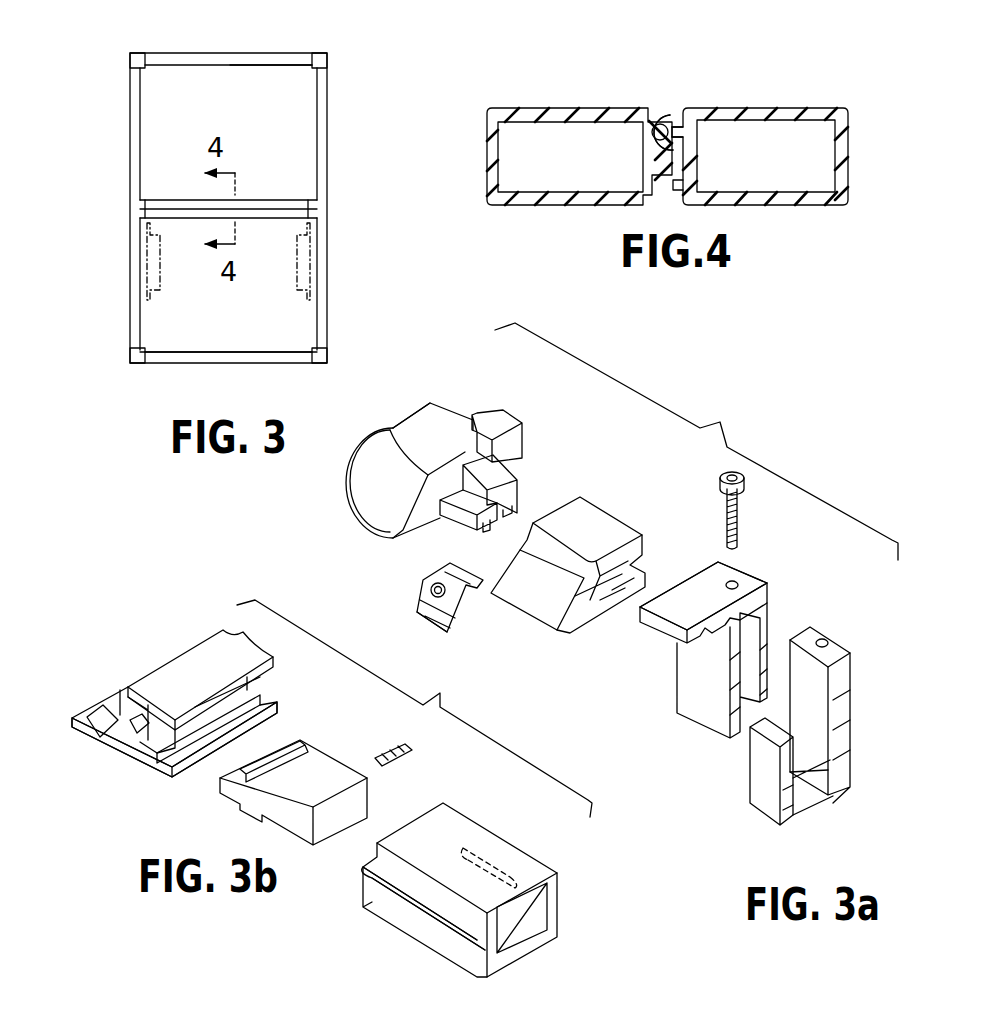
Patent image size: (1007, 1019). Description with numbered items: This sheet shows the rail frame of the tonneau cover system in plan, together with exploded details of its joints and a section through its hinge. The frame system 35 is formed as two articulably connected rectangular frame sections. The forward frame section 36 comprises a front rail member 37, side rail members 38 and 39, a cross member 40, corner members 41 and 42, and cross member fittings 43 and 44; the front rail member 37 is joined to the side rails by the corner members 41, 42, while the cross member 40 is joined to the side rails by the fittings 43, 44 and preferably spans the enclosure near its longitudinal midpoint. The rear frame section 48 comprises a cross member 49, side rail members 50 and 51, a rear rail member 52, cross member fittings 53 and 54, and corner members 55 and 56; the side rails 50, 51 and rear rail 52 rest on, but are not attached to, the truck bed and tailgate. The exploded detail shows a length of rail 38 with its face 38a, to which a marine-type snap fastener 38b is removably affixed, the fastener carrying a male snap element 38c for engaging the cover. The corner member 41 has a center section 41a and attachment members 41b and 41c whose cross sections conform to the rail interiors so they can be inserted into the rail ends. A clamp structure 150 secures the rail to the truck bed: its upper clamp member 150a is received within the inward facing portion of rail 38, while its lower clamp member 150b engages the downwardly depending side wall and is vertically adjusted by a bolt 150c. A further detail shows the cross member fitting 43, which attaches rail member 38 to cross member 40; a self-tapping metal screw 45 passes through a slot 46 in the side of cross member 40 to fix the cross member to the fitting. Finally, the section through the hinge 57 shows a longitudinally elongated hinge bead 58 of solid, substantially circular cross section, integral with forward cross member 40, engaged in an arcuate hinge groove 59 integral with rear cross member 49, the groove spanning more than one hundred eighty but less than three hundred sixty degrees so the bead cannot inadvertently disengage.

In FIG. 3, the frame system 35 is at (108, 83).
In FIG. 3, the forward frame section 36 is at (196, 50).
In FIG. 3, the front rail member 37 is at (262, 53).
In FIG. 3, the side rail member 38 is at (130, 115).
In FIG. 3A, the side rail member 38 is at (629, 509).
In FIG. 3B, the side rail member 38 is at (215, 652).
In FIG. 3A, the face 38a is at (545, 613).
In FIG. 3B, the face 38a is at (152, 670).
In FIG. 3A, the snap fastener 38b is at (453, 625).
In FIG. 3A, the male snap element 38c is at (422, 583).
In FIG. 3, the side rail member 39 is at (326, 113).
In FIG. 3, the cross member 40 is at (280, 200).
In FIG. 4, the cross member 40 is at (812, 108).
In FIG. 3B, the cross member 40 is at (463, 818).
In FIG. 3, the corner member 41 is at (134, 50).
In FIG. 3A, the corner member 41 is at (418, 437).
In FIG. 3A, the center section 41a is at (422, 415).
In FIG. 3A, the attachment member 41b is at (511, 493).
In FIG. 3A, the attachment member 41c is at (511, 441).
In FIG. 3, the corner member 42 is at (328, 60).
In FIG. 3, the cross member fitting 43 is at (140, 203).
In FIG. 3B, the cross member fitting 43 is at (325, 768).
In FIG. 3, the cross member fitting 44 is at (312, 203).
In FIG. 3B, the self-tapping metal screw 45 is at (387, 752).
In FIG. 3B, the slot 46 is at (510, 857).
In FIG. 3, the rear frame section 48 is at (126, 321).
In FIG. 3, the cross member 49 is at (270, 218).
In FIG. 4, the cross member 49 is at (540, 108).
In FIG. 3, the side rail member 50 is at (320, 310).
In FIG. 3, the side rail member 51 is at (135, 282).
In FIG. 3, the rear rail member 52 is at (180, 355).
In FIG. 3, the cross member fitting 53 is at (140, 217).
In FIG. 3, the cross member fitting 54 is at (317, 218).
In FIG. 3, the corner member 55 is at (327, 358).
In FIG. 3, the corner member 56 is at (130, 358).
In FIG. 4, the hinge 57 is at (689, 88).
In FIG. 4, the hinge bead 58 is at (656, 146).
In FIG. 3B, the hinge bead 58 is at (363, 872).
In FIG. 4, the hinge groove 59 is at (652, 118).
In FIG. 3A, the clamp structure 150 is at (806, 590).
In FIG. 3A, the upper clamp member 150a is at (710, 717).
In FIG. 3A, the lower clamp member 150b is at (814, 812).
In FIG. 3A, the bolt 150c is at (739, 516).